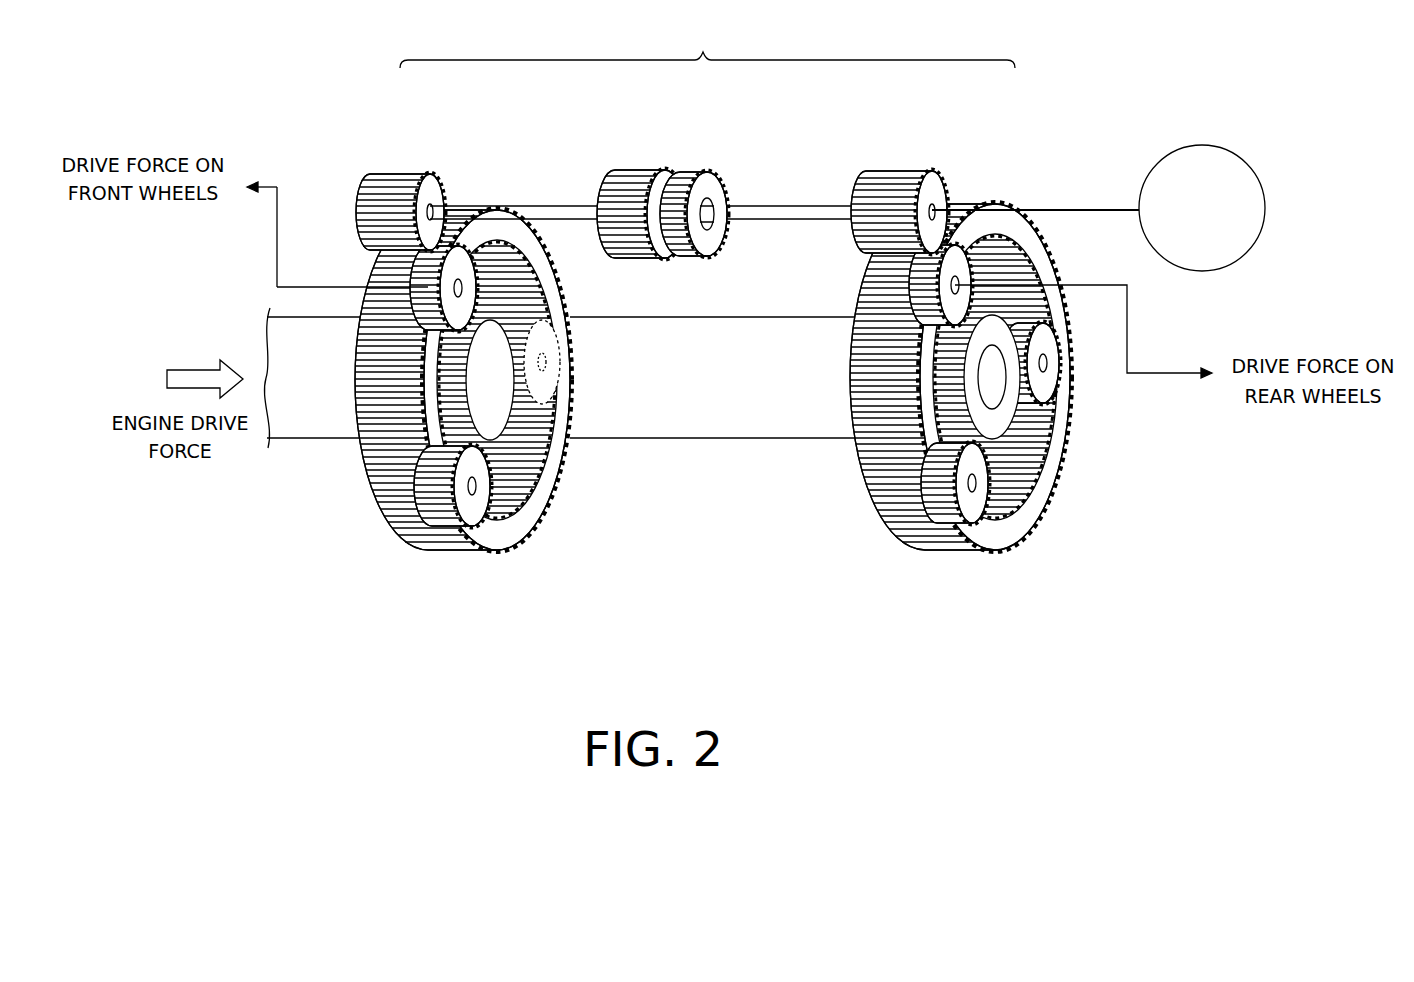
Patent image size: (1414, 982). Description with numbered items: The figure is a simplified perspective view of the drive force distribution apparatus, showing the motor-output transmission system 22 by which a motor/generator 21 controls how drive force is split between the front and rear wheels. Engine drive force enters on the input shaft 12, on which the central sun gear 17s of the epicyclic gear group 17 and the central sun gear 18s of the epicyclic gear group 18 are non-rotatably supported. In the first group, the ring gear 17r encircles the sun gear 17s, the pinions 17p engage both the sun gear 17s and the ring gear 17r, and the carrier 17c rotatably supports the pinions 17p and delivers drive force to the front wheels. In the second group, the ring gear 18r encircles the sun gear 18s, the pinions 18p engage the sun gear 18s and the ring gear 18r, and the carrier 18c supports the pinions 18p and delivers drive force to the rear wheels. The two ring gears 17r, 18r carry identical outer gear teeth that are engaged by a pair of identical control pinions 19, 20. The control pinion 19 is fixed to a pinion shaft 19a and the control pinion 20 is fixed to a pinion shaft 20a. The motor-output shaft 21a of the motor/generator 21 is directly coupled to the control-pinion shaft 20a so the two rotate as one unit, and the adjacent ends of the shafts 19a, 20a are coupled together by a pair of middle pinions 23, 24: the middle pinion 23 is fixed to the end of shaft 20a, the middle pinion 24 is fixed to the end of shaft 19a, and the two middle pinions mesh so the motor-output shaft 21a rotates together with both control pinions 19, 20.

The input shaft 12 is at (716, 439).
The epicyclic gear group 17 is at (461, 421).
The carrier 17c is at (320, 288).
The pinions (planet gears) 17p is at (472, 500).
The ring gear 17r is at (502, 553).
The central sun gear 17s is at (448, 420).
The epicyclic gear group 18 is at (1004, 393).
The carrier 18c is at (1096, 286).
The pinions (planet gears) 18p is at (987, 497).
The ring gear 18r is at (1023, 533).
The central sun gear 18s is at (1013, 433).
The control pinion 19 is at (389, 174).
The pinion shaft 19a is at (543, 205).
The control pinion 20 is at (896, 174).
The pinion shaft 20a is at (800, 205).
The motor/generator 21 is at (1202, 146).
The motor-output shaft 21a is at (1067, 210).
The motor-output transmission system 22 is at (685, 160).
The middle pinion 23 is at (645, 260).
The middle pinion 24 is at (738, 176).